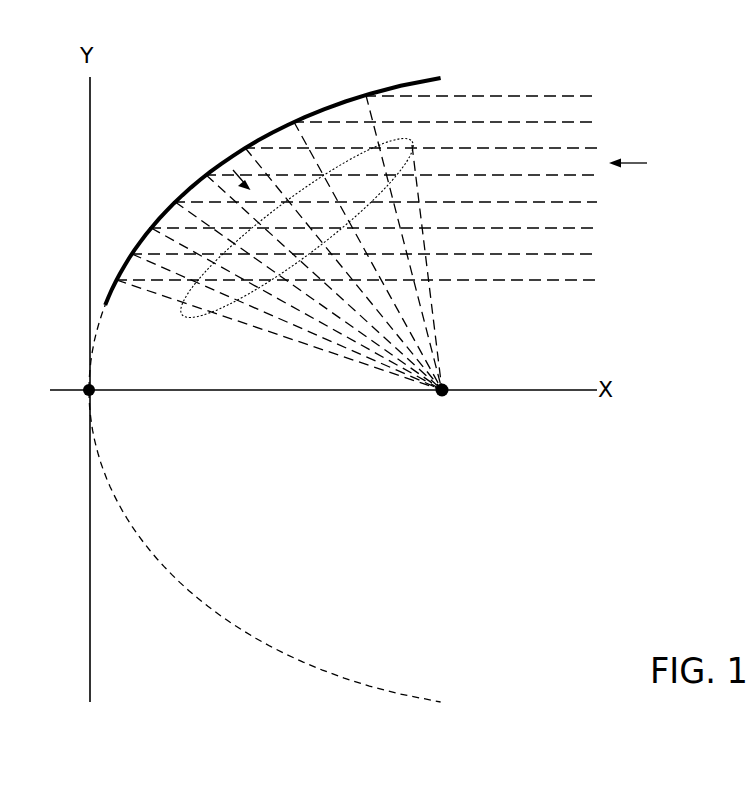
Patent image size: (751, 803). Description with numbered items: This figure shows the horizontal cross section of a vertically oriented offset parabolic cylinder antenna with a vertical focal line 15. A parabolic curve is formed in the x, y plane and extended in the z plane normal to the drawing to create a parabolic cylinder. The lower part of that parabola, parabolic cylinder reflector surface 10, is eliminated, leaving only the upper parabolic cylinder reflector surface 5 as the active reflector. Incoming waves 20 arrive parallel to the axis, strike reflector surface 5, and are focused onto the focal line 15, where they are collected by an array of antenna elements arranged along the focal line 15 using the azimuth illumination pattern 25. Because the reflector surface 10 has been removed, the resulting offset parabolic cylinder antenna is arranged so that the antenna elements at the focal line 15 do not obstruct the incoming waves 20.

The parabolic cylinder reflector surface 5 is at (340, 97).
The parabolic cylinder reflector surface 10 is at (187, 595).
The vertical focal line 15 is at (450, 384).
The incoming waves 20 is at (543, 95).
The azimuth illumination pattern 25 is at (185, 317).